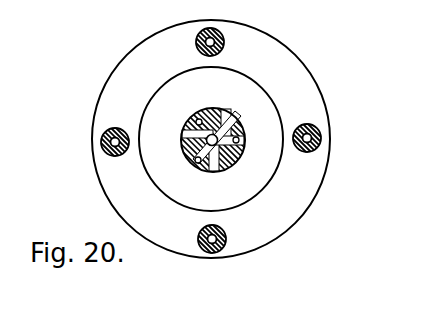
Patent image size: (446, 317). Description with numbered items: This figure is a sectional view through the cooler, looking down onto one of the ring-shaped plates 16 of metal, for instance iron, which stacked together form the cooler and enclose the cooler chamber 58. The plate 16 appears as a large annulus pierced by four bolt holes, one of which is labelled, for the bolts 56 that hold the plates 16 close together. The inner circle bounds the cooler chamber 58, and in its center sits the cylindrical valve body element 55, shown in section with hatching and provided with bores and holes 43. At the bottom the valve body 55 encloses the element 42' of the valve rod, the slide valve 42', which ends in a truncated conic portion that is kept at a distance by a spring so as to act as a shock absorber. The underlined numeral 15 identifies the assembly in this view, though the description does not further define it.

The flange plate 15 is at (63, 179).
The ring-shaped plate 16 is at (302, 75).
The slide valve 42' is at (198, 144).
The bores and holes 43 is at (226, 112).
The valve body element 55 is at (209, 142).
The bolt 56 is at (320, 138).
The cooler chamber 58 is at (266, 154).